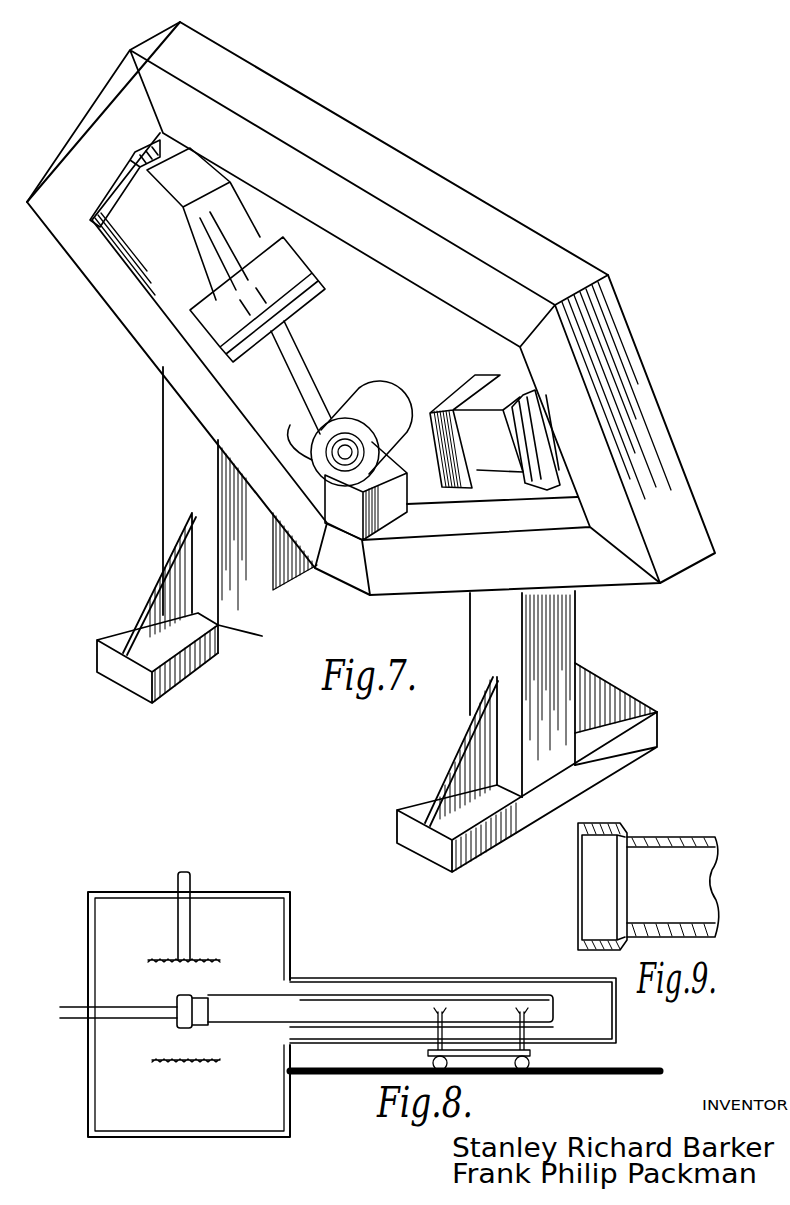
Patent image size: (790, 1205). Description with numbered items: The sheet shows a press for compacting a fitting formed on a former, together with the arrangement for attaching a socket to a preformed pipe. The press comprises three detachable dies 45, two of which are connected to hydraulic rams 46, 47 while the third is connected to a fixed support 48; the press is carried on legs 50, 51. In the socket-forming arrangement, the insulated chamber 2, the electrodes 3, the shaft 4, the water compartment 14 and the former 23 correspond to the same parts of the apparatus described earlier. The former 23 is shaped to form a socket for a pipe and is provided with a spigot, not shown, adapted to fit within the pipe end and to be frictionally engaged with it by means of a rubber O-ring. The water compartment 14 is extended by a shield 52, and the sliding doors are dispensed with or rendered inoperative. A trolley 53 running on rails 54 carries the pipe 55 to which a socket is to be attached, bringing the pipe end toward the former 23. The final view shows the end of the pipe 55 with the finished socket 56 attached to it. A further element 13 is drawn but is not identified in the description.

In FIG. 8, the insulated chamber 2 is at (290, 937).
In FIG. 8, the electrodes 3 is at (216, 958).
In FIG. 8, the shaft 4 is at (120, 1012).
In FIG. 8, the vertical rod 13 is at (178, 921).
In FIG. 8, the water compartment 14 is at (302, 977).
In FIG. 8, the former 23 is at (180, 996).
In FIG. 7, the detachable dies 45 is at (318, 430).
In FIG. 7, the hydraulic ram 46 is at (547, 442).
In FIG. 7, the hydraulic ram 47 is at (122, 179).
In FIG. 7, the fixed support 48 is at (352, 505).
In FIG. 7, the leg 50 is at (560, 636).
In FIG. 7, the leg 51 is at (254, 561).
In FIG. 8, the shield 52 is at (428, 978).
In FIG. 8, the trolley 53 is at (532, 1050).
In FIG. 8, the rails 54 is at (615, 1078).
In FIG. 8, the pipe 55 is at (512, 995).
In FIG. 9, the pipe 55 is at (694, 838).
In FIG. 9, the socket 56 is at (606, 824).